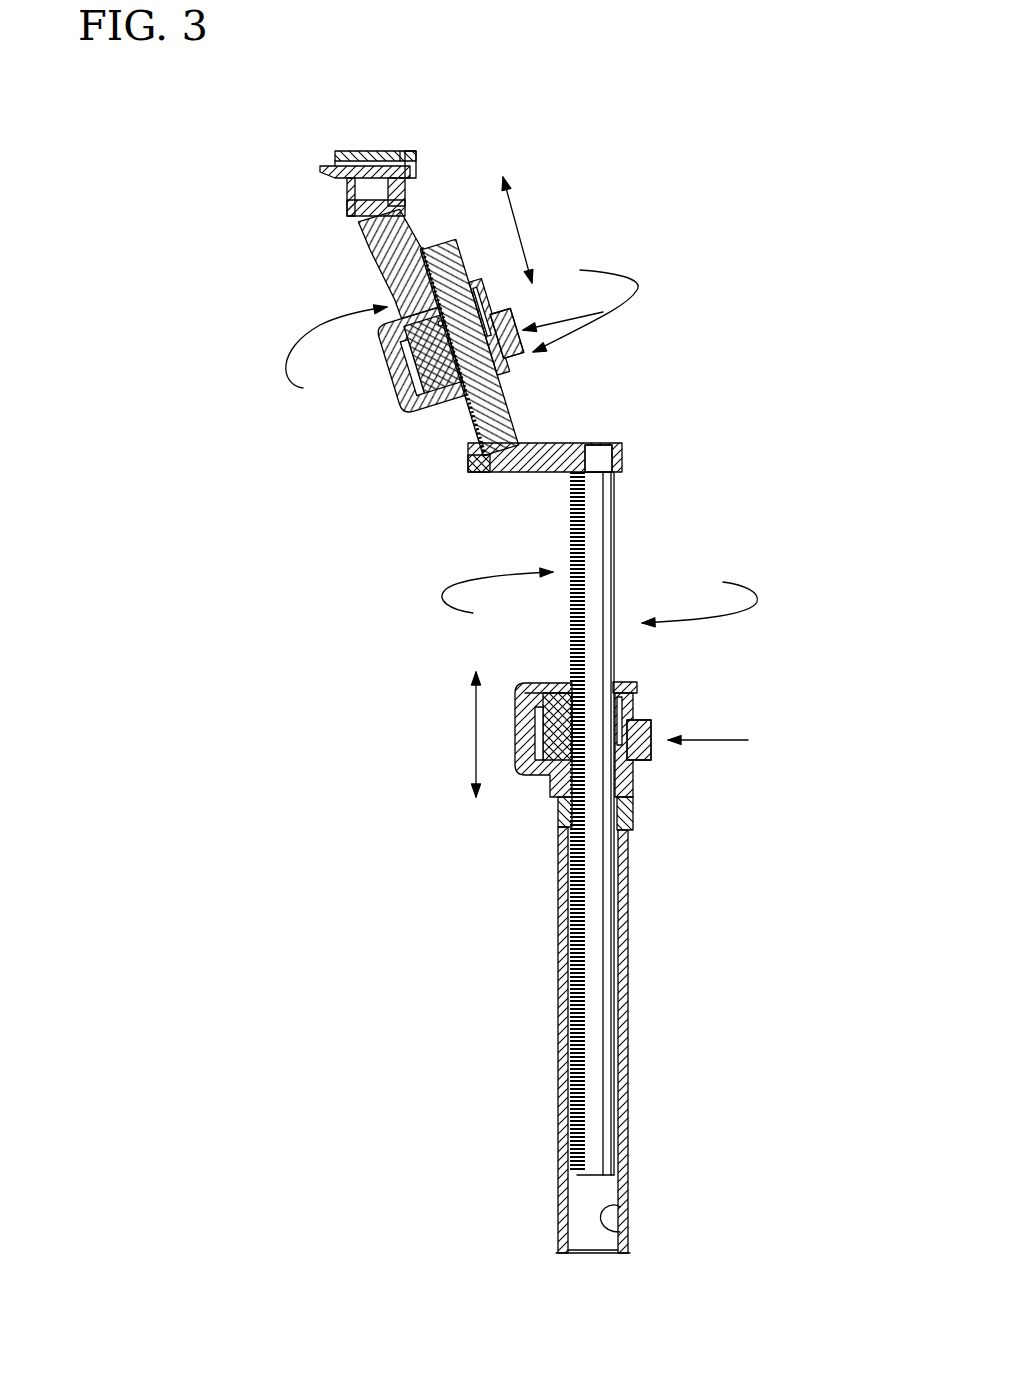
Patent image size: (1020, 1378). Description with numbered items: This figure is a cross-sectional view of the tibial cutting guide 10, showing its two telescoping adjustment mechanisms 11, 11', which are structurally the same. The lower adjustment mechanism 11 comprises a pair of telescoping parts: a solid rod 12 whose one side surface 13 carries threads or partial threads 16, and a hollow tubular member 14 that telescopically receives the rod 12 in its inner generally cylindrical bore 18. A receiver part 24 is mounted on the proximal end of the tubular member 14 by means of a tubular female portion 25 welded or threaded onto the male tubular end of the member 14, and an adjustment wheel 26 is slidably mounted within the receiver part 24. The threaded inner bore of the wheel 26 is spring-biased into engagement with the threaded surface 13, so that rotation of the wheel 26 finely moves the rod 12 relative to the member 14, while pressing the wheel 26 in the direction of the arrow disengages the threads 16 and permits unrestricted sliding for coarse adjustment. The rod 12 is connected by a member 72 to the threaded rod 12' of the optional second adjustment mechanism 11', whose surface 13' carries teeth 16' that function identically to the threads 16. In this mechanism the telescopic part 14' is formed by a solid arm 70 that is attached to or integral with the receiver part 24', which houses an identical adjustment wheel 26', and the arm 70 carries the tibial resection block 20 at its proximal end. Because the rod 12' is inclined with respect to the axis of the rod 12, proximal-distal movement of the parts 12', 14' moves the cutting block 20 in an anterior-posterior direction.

The tibial cutting guide 10 is at (160, 150).
The tibial resection block 20 is at (375, 165).
The solid arm 70 is at (393, 305).
The telescoping part 14' is at (366, 271).
The adjustment mechanism 11' is at (367, 416).
The receiver part 24' is at (383, 374).
The adjustment wheel 26' is at (548, 295).
The threaded rod 12' is at (509, 335).
The teeth 16' is at (393, 382).
The surface 13' is at (423, 485).
The member 72 is at (622, 458).
The side surface 13 is at (529, 498).
The threads 16 is at (519, 846).
The rod 12 is at (648, 823).
The adjustment mechanism 11 is at (535, 693).
The receiver part 24 is at (526, 772).
The adjustment wheel 26 is at (670, 731).
The tubular female portion 25 is at (632, 820).
The hollow tubular member 14 is at (636, 1040).
The inner cylindrical bore 18 is at (620, 1232).